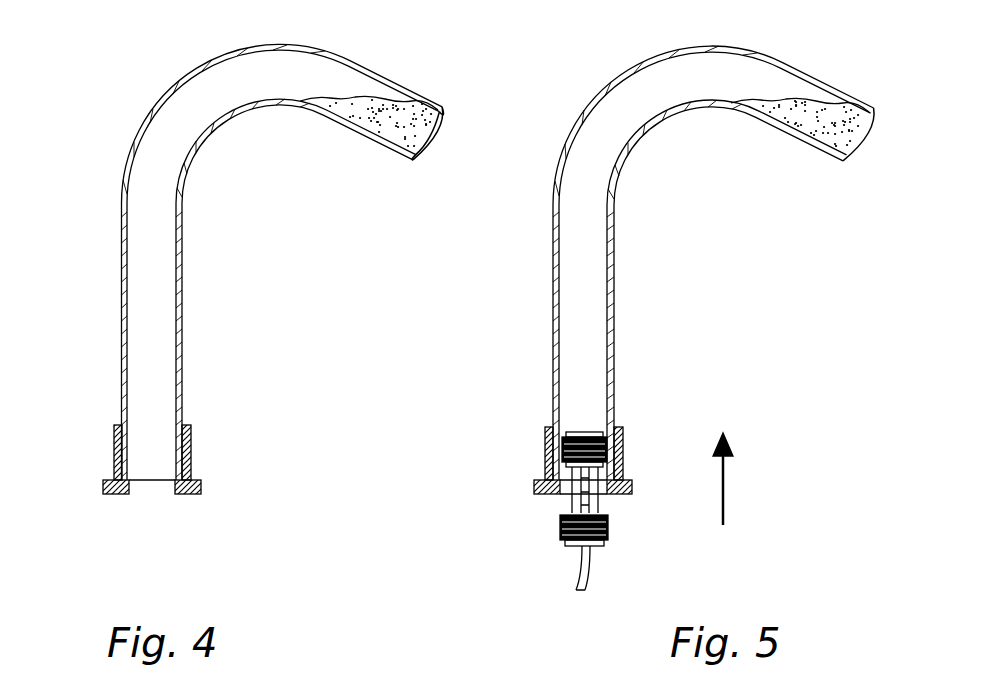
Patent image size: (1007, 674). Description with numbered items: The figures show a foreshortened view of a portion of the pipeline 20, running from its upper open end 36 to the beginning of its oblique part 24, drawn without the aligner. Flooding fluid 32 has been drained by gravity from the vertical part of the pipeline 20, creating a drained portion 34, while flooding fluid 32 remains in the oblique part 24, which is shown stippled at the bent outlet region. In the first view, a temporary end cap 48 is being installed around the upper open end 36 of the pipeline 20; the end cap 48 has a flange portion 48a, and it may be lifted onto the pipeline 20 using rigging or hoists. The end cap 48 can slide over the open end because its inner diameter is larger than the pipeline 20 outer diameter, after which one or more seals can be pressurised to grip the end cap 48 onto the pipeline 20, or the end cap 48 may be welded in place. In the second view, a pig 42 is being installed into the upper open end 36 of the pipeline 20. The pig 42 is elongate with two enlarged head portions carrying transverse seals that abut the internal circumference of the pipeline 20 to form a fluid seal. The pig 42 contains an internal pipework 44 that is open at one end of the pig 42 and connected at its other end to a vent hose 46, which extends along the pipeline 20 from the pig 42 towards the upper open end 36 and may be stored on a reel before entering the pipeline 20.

In FIG. 4, the pipeline 20 is at (121, 293).
In FIG. 4, the oblique part 24 is at (382, 78).
In FIG. 4, the flooding fluid 32 is at (390, 128).
In FIG. 5, the flooding fluid 32 is at (830, 133).
In FIG. 4, the drained portion 34 is at (157, 248).
In FIG. 5, the drained portion 34 is at (575, 283).
In FIG. 4, the upper open end 36 is at (152, 482).
In FIG. 5, the pig 42 is at (568, 500).
In FIG. 5, the internal pipework 44 is at (600, 498).
In FIG. 5, the vent hose 46 is at (590, 563).
In FIG. 4, the temporary end cap 48 is at (114, 450).
In FIG. 5, the temporary end cap 48 is at (545, 448).
In FIG. 4, the flange portion 48a is at (201, 485).